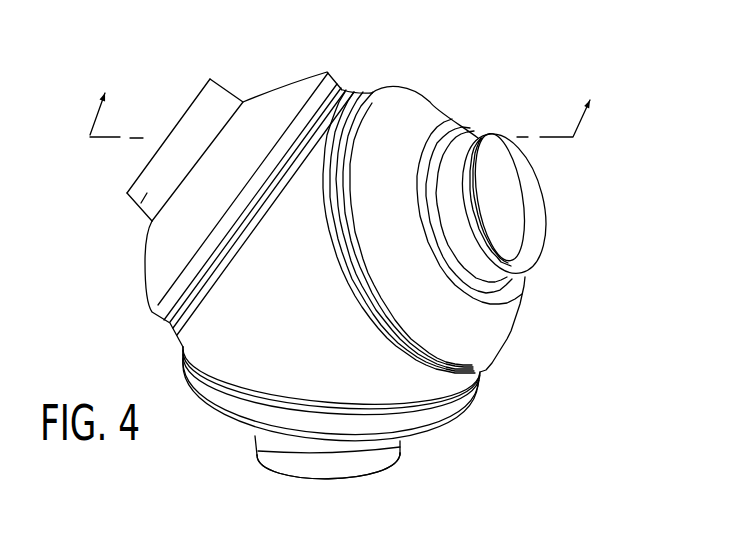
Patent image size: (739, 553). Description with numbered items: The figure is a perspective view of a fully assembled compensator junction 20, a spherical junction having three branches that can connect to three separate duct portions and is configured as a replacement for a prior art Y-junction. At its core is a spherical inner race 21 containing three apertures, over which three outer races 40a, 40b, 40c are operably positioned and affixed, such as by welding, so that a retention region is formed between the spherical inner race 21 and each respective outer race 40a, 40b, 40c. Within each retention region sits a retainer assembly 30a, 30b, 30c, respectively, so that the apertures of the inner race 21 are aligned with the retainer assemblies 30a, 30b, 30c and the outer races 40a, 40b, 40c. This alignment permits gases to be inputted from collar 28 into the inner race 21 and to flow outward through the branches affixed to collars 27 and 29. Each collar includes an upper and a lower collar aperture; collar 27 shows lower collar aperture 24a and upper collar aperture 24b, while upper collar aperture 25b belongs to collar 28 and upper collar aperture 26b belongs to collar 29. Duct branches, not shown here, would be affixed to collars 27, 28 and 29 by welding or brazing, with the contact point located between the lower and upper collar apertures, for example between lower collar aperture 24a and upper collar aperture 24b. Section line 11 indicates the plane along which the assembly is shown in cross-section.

The section line 11- 11 is at (347, 102).
The compensator junction 20 is at (413, 62).
The spherical inner race 21 is at (373, 377).
The lower collar aperture 24a is at (510, 233).
The upper collar aperture 24b is at (538, 182).
The upper collar aperture 25b is at (142, 182).
The upper collar aperture 26b is at (298, 477).
The collar 27 is at (493, 267).
The collar 28 is at (147, 193).
The collar 29 is at (267, 450).
The retainer assembly 30a is at (448, 137).
The retainer assembly 30b is at (212, 138).
The retainer assembly 30c is at (392, 453).
The outer race 40a is at (403, 127).
The outer race 40b is at (277, 105).
The outer race 40c is at (457, 393).